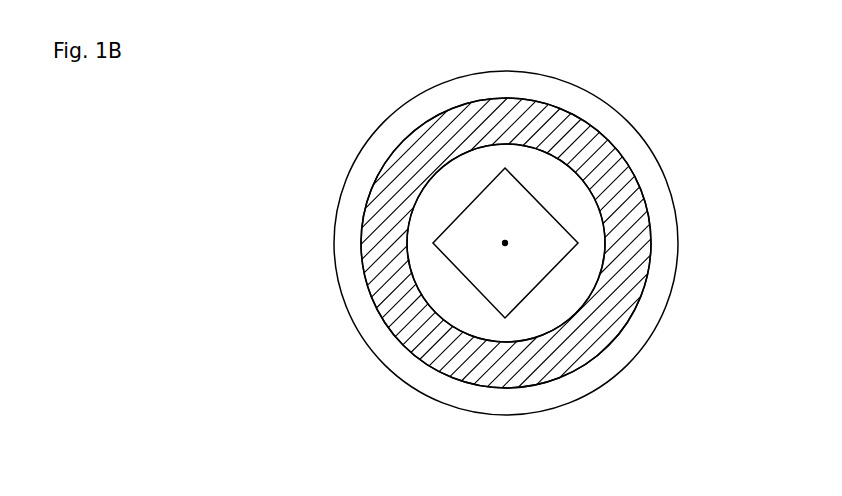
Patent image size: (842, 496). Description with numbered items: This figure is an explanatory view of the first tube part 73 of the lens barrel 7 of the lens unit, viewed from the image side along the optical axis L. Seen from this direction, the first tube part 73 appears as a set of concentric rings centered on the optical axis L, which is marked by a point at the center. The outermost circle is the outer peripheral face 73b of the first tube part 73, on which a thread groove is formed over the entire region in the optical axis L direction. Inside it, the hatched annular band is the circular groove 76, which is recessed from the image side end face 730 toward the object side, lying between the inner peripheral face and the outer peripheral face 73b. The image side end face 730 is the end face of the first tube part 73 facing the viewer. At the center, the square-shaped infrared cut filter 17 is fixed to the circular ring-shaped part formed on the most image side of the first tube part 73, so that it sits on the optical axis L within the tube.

The lens barrel 7 is at (532, 244).
The first tube part 73 is at (532, 264).
The outer peripheral face 73b is at (610, 382).
The circular groove 76 is at (627, 327).
The image side end face 730 is at (510, 155).
The infrared cut filter 17 is at (553, 216).
The optical axis L is at (508, 243).